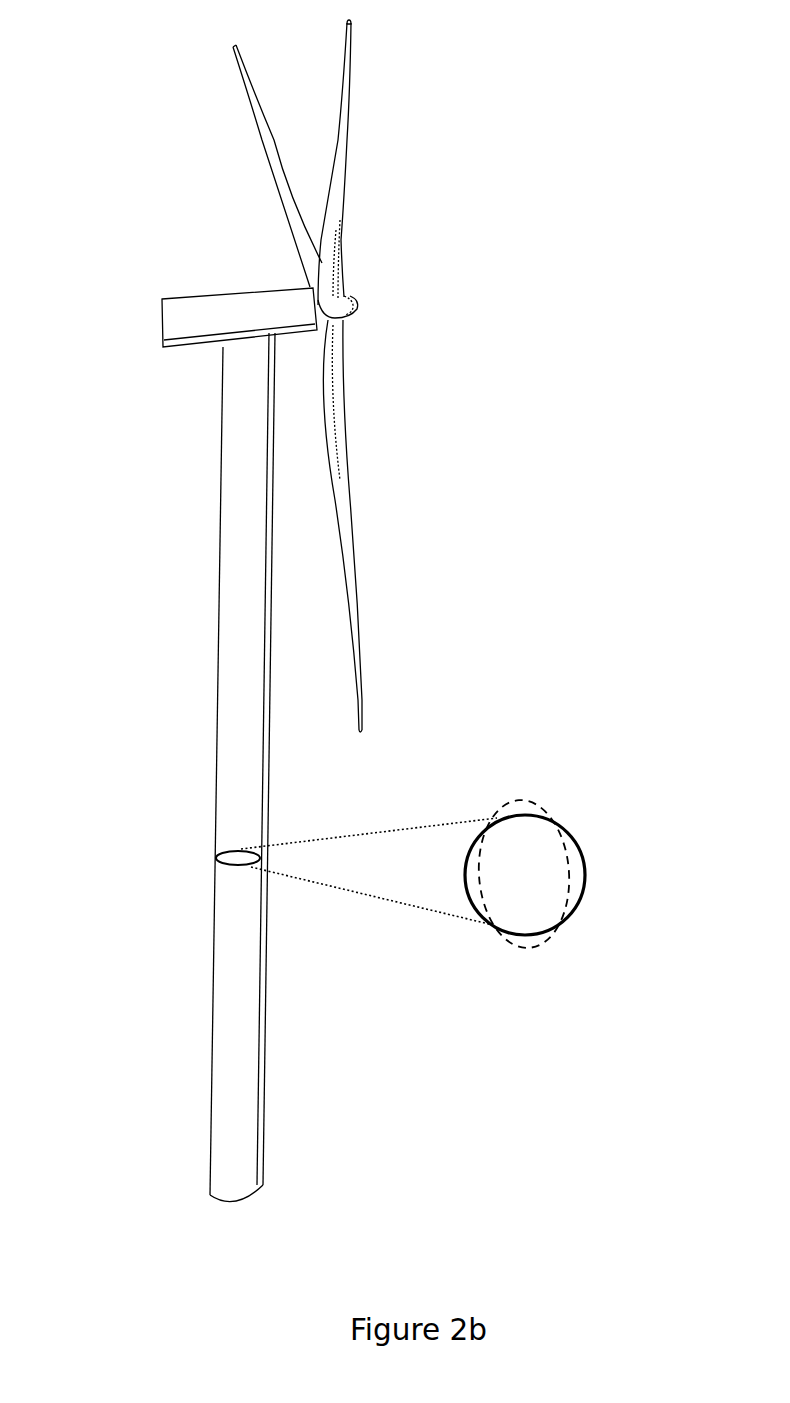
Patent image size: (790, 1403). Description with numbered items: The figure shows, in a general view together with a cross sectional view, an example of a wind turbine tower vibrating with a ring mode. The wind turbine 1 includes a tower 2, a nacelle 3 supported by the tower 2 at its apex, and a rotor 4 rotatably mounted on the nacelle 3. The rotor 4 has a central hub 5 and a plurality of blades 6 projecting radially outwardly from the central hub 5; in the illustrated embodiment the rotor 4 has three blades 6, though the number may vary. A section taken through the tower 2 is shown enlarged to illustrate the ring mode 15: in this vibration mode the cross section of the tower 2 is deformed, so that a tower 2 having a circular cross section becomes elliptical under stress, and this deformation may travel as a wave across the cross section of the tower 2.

The wind turbine 1 is at (463, 138).
The tower 2 is at (263, 1015).
The nacelle 3 is at (188, 296).
The rotor 4 is at (365, 317).
The central hub 5 is at (346, 298).
The blades 6 is at (268, 147).
The ring mode 15 is at (532, 948).